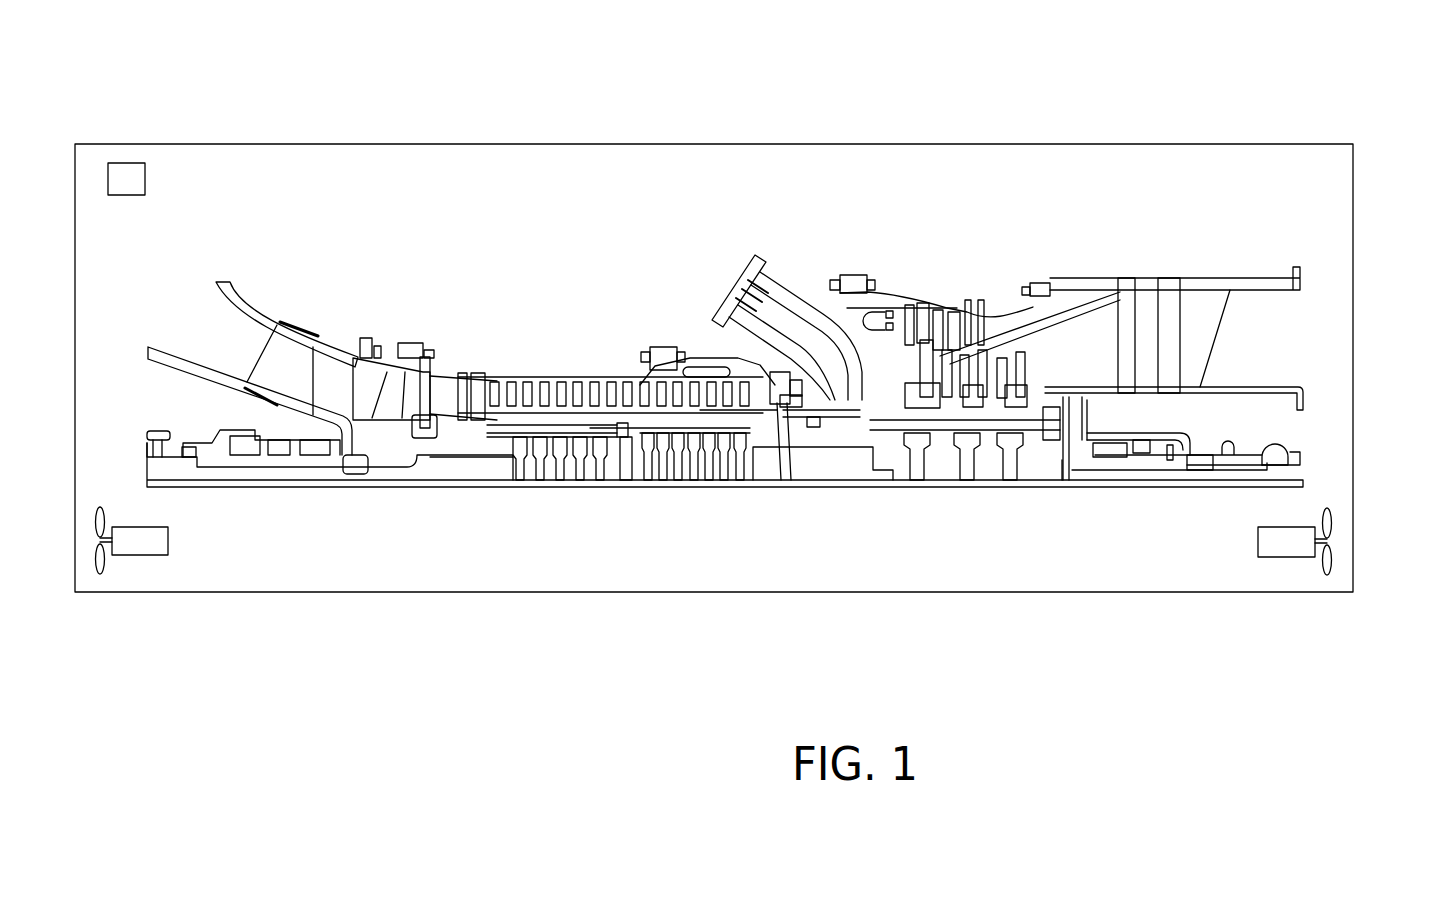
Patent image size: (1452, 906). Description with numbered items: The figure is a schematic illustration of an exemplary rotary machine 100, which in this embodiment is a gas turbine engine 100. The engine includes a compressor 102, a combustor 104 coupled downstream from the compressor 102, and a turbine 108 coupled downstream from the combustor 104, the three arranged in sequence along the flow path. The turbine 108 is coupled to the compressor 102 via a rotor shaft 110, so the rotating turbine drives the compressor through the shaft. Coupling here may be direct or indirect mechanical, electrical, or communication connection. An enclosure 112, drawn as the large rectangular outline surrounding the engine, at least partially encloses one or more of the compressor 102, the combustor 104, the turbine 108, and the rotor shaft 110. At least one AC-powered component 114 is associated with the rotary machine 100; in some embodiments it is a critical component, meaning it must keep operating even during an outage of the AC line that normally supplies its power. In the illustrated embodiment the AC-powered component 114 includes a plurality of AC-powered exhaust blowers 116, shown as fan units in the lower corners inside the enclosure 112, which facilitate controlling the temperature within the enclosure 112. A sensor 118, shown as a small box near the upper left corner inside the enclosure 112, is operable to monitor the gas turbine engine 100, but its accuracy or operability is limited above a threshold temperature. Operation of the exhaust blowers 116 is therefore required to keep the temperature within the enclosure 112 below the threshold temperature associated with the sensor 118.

The rotary machine 100 is at (364, 102).
The compressor 102 is at (490, 365).
The combustor 104 is at (831, 226).
The turbine 108 is at (988, 300).
The rotor shaft 110 is at (540, 498).
The enclosure 112 is at (1353, 184).
The AC-powered component 114 is at (137, 555).
The AC-powered exhaust blowers 116 is at (714, 541).
The sensor 118 is at (126, 163).